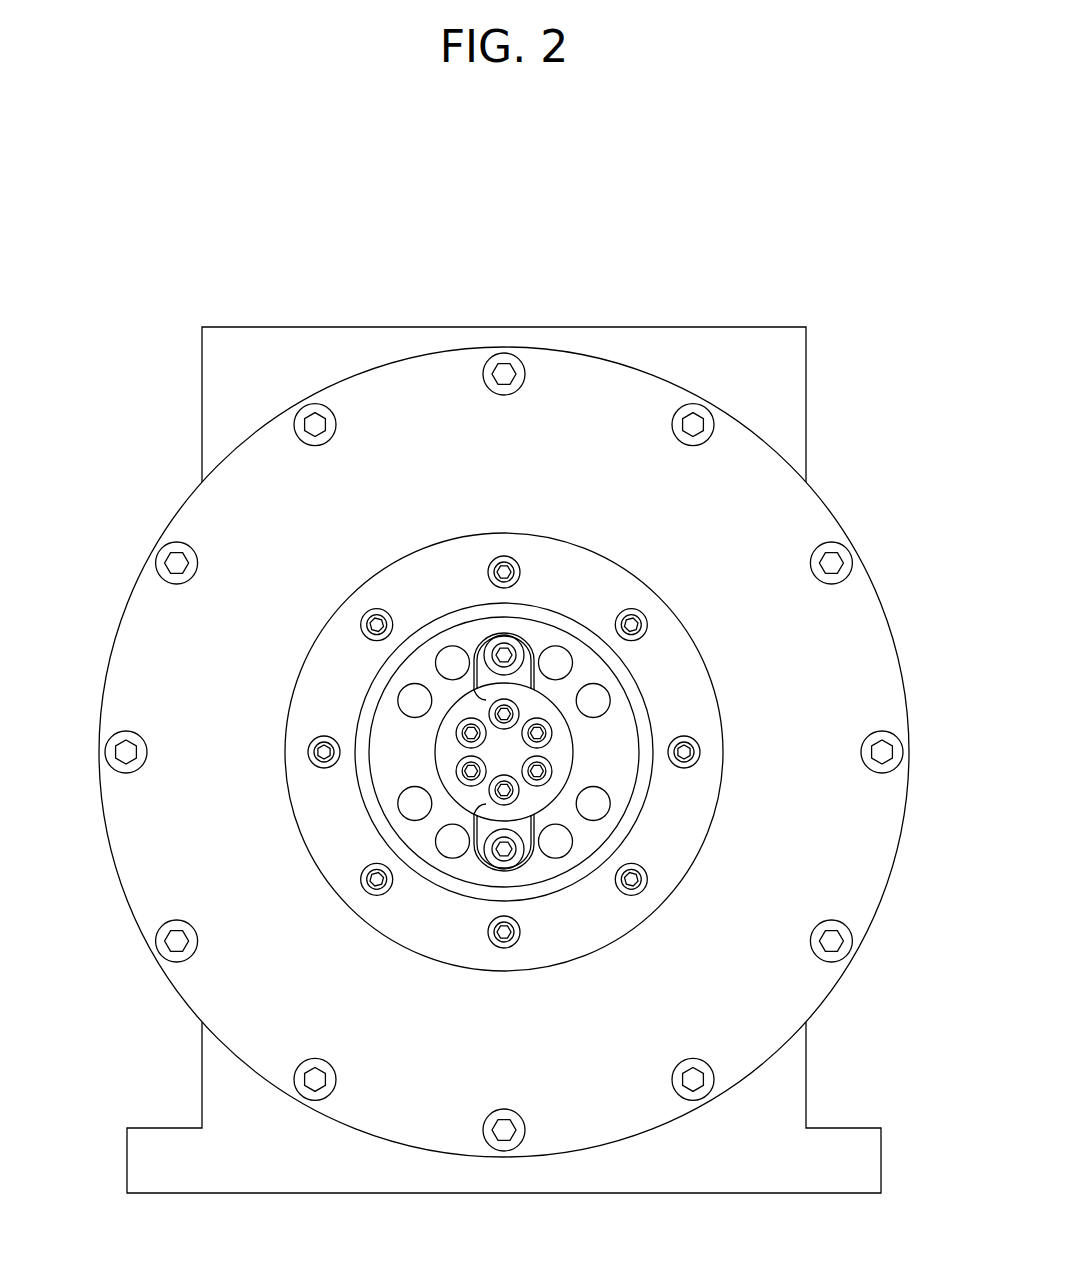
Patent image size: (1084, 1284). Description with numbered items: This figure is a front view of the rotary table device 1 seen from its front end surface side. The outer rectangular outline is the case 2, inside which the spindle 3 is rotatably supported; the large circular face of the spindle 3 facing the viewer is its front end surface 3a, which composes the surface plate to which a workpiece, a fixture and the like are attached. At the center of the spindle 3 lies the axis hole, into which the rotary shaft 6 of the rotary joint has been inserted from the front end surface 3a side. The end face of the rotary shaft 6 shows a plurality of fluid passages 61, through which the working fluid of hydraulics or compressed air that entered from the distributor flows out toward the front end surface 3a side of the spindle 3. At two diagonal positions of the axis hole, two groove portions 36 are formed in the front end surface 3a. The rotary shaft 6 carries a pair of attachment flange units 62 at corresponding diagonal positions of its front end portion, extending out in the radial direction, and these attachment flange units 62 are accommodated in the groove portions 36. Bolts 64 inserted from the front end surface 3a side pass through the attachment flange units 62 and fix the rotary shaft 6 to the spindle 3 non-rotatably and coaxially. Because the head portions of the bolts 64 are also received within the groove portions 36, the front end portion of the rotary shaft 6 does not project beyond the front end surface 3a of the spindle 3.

The rotary table device 1 is at (542, 231).
The case 2 is at (727, 327).
The spindle 3 is at (637, 720).
The front end surface 3a is at (612, 770).
The rotary shaft 6 is at (448, 731).
The fluid passages 61 is at (470, 772).
The attachment flange units 62 is at (486, 673).
The groove portions 36 is at (524, 632).
The bolts 64 is at (497, 652).